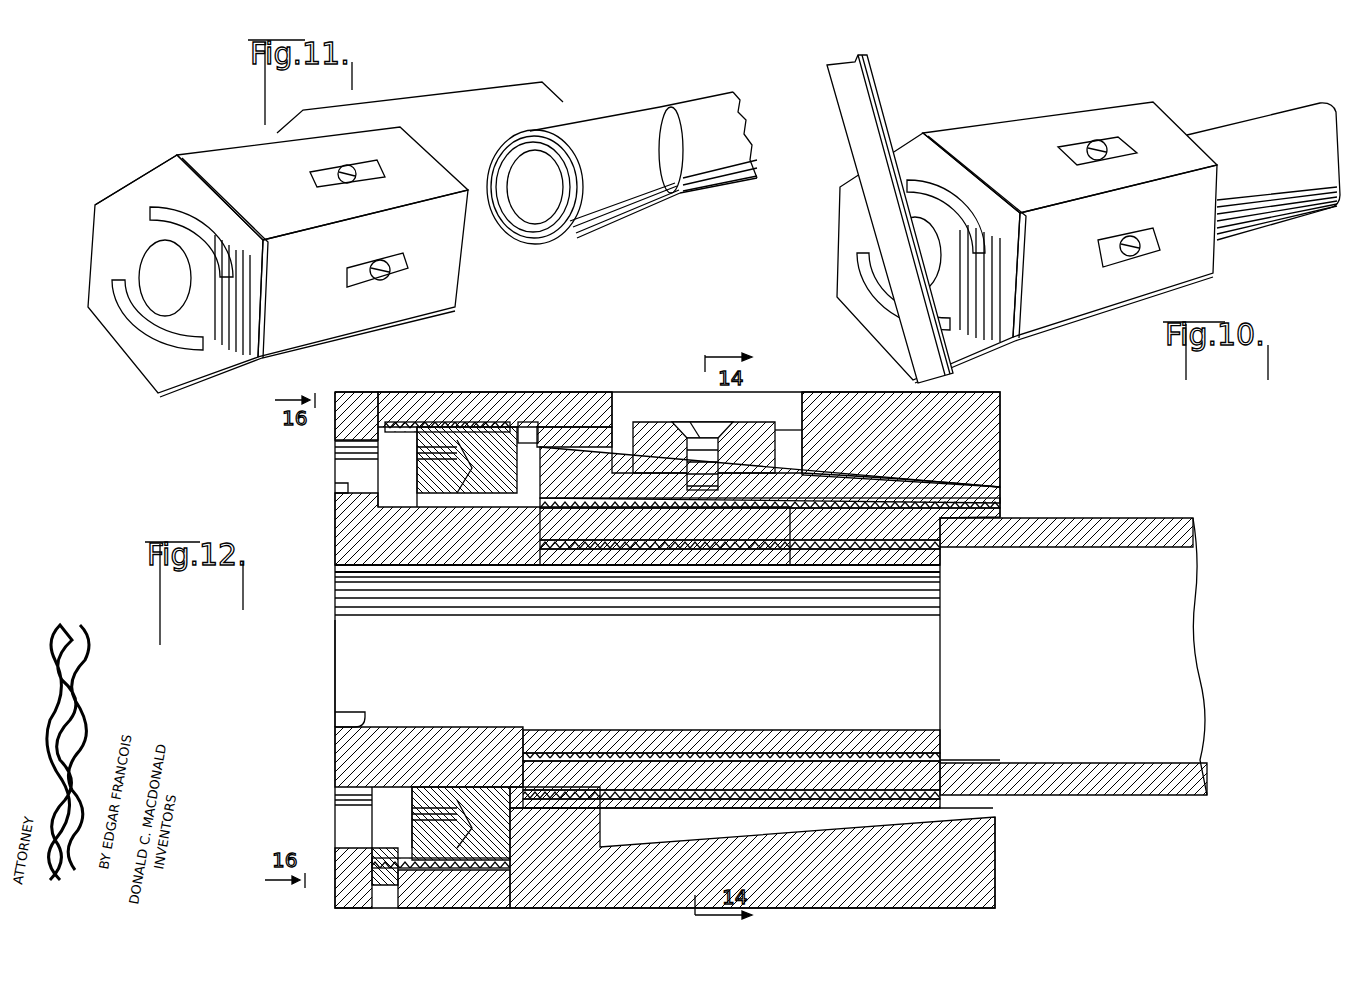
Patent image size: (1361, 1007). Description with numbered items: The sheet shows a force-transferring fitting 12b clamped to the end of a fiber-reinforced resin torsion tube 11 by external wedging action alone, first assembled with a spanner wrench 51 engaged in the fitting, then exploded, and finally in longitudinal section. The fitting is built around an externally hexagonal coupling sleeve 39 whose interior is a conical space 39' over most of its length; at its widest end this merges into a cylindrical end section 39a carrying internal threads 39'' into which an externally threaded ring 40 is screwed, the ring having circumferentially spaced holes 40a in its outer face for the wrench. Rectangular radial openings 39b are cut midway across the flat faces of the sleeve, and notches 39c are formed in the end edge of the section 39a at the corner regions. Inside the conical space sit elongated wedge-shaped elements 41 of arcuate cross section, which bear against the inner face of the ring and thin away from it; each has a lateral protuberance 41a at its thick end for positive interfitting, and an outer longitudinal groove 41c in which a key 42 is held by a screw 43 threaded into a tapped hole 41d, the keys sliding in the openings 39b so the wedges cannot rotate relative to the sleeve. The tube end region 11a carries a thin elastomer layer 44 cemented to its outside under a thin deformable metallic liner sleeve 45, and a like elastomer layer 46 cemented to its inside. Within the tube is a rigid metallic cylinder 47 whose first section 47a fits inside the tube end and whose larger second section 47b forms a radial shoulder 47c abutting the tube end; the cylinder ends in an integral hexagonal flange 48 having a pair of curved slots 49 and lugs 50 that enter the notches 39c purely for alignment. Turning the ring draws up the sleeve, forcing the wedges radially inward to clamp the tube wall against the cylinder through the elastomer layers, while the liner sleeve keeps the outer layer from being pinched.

In FIG. 11, the fiber-reinforced resin tube 11 is at (609, 184).
In FIG. 10, the fiber-reinforced resin tube 11 is at (1258, 118).
In FIG. 12, the fiber-reinforced resin tube 11 is at (1160, 518).
In FIG. 11, the tube end region 11a is at (545, 240).
In FIG. 12, the tube end region 11a is at (540, 520).
In FIG. 11, the force-transferring fitting 12b is at (256, 138).
In FIG. 10, the force-transferring fitting 12b is at (1118, 78).
In FIG. 11, the coupling sleeve 39 is at (295, 262).
In FIG. 10, the coupling sleeve 39 is at (1027, 242).
In FIG. 12, the coupling sleeve 39 is at (697, 650).
In FIG. 12, the conical interior space 39' is at (901, 465).
In FIG. 12, the internal threads 39'' is at (348, 467).
In FIG. 12, the end section 39a is at (440, 395).
In FIG. 12, the rectangular radial openings 39b is at (612, 430).
In FIG. 12, the notches 39c is at (412, 875).
In FIG. 12, the externally threaded ring 40 is at (518, 425).
In FIG. 12, the holes 40a is at (430, 485).
In FIG. 12, the wedge-shaped elements 41 is at (1003, 490).
In FIG. 12, the lateral protuberance 41a is at (565, 840).
In FIG. 12, the longitudinal grooves 41c is at (808, 445).
In FIG. 12, the tapped hole 41d is at (663, 440).
In FIG. 12, the key 42 is at (763, 420).
In FIG. 12, the screw 43 is at (705, 425).
In FIG. 12, the elastomer layer 44 is at (998, 797).
In FIG. 11, the liner sleeve 45 is at (620, 215).
In FIG. 12, the liner sleeve 45 is at (1003, 505).
In FIG. 11, the elastomer layer 46 is at (515, 163).
In FIG. 12, the elastomer layer 46 is at (940, 758).
In FIG. 12, the cylinder 47 is at (323, 653).
In FIG. 12, the first section 47a is at (808, 733).
In FIG. 12, the second section 47b is at (335, 713).
In FIG. 12, the radial shoulder 47c is at (523, 745).
In FIG. 11, the flange 48 is at (132, 185).
In FIG. 10, the flange 48 is at (847, 223).
In FIG. 12, the flange 48 is at (357, 393).
In FIG. 11, the circularly curved slots 49 is at (112, 290).
In FIG. 10, the circularly curved slots 49 is at (857, 262).
In FIG. 12, the circularly curved slots 49 is at (335, 490).
In FIG. 12, the lugs 50 is at (392, 848).
In FIG. 10, the spanner wrench 51 is at (878, 100).